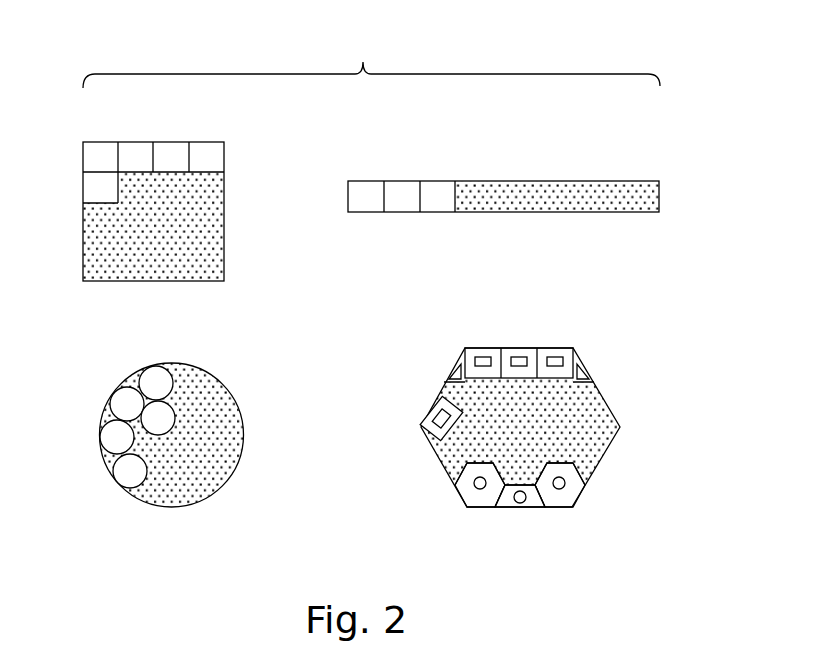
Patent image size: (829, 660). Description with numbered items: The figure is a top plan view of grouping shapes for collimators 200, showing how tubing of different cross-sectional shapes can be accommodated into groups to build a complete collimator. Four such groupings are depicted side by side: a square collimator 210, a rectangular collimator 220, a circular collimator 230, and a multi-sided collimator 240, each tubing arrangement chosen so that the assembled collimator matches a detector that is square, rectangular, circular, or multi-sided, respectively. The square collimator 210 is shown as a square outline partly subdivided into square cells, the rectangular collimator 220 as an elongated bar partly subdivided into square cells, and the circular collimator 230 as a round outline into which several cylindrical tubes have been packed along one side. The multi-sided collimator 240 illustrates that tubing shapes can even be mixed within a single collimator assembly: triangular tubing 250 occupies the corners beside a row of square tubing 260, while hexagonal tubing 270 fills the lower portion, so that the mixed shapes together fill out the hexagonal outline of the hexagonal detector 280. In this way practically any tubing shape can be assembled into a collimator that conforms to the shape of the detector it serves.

The collimators 200 is at (371, 63).
The square collimator 210 is at (234, 196).
The rectangular collimator 220 is at (669, 195).
The circular collimator 230 is at (252, 428).
The multi-sided collimator 240 is at (540, 423).
The triangular tubing 250 is at (452, 375).
The square tubing 260 is at (554, 357).
The hexagonal tubing 270 is at (474, 486).
The hexagonal detector 280 is at (587, 450).